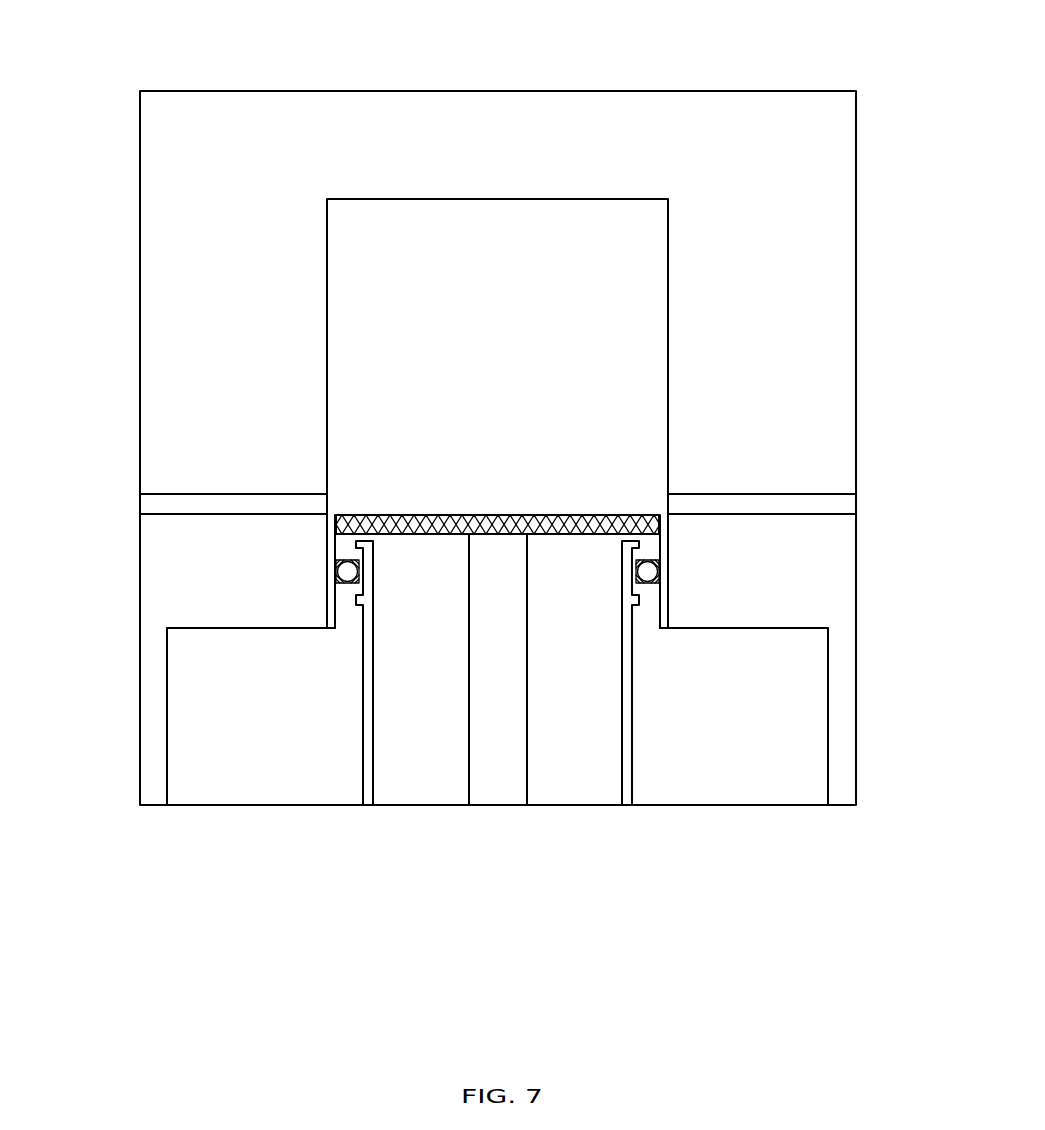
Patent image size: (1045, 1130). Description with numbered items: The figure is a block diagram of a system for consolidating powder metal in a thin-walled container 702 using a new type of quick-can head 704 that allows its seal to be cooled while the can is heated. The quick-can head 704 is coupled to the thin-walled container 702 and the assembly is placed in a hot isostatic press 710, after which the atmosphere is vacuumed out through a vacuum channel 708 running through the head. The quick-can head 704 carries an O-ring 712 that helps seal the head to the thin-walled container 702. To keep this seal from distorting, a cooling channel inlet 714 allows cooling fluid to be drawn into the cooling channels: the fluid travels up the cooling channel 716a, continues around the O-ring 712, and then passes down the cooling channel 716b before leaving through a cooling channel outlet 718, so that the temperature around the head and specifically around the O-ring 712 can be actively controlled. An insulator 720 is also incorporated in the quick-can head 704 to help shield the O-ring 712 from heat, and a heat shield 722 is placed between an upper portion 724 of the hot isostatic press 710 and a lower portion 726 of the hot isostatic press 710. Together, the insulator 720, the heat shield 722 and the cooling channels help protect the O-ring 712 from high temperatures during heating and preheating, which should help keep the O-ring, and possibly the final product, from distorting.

The thin-walled container 702 is at (668, 290).
The quick-can head 704 is at (802, 689).
The vacuum channel 708 is at (502, 788).
The hot isostatic press 710 is at (140, 213).
The O-ring 712 is at (346, 572).
The cooling channel inlet 714 is at (368, 826).
The cooling channel 716a is at (368, 765).
The cooling channel 716b is at (628, 765).
The cooling channel outlet 718 is at (628, 826).
The insulator 720 is at (480, 515).
The heat shield 722 is at (173, 494).
The upper portion 724 is at (760, 113).
The lower portion 726 is at (121, 647).